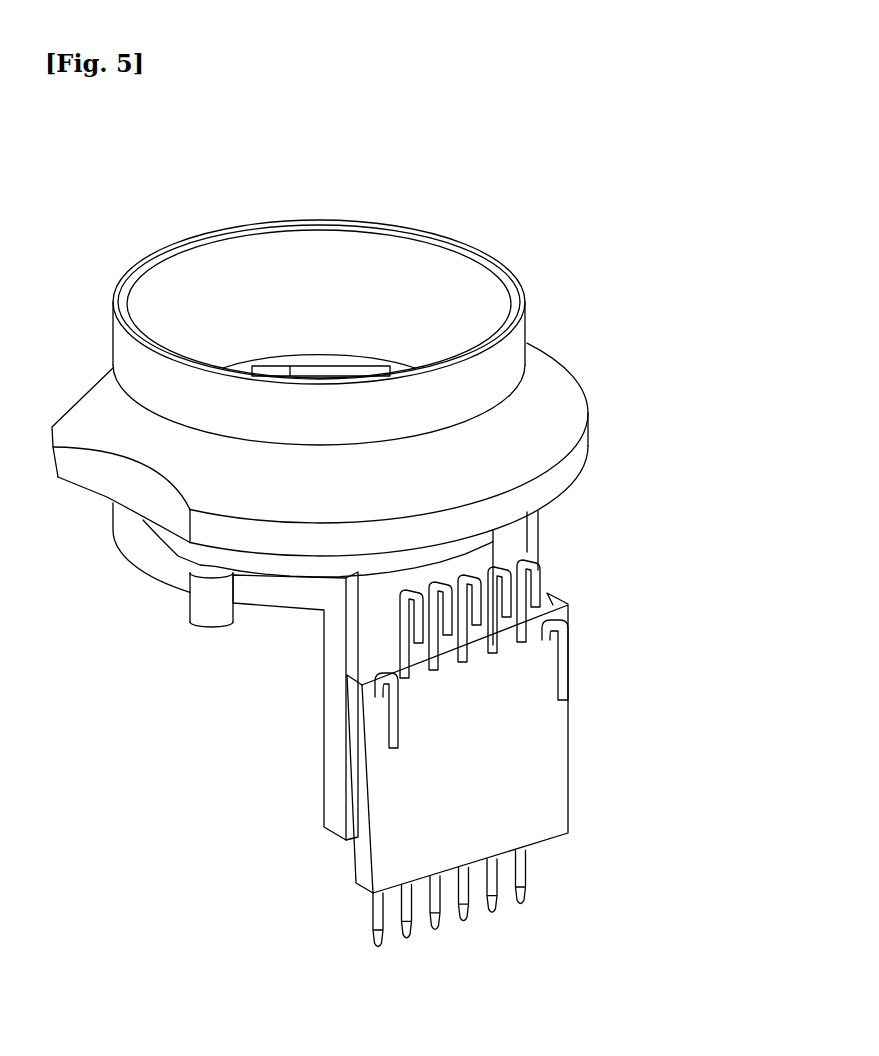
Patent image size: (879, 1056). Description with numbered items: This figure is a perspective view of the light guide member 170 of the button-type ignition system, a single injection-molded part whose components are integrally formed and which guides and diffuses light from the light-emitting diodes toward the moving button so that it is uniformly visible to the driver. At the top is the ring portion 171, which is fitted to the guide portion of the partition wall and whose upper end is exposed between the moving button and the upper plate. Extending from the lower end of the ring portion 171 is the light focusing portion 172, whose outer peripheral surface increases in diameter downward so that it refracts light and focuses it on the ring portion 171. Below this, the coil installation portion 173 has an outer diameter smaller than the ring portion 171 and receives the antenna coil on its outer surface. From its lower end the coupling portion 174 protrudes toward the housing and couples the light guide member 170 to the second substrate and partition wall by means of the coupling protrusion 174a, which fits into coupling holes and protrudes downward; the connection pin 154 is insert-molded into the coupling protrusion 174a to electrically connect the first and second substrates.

The light guide member 170 is at (346, 144).
The ring portion 171 is at (462, 247).
The light focusing portion 172 is at (558, 377).
The coil installation portion 173 is at (283, 558).
The coupling portion 174 is at (150, 562).
The coupling protrusion 174a is at (333, 800).
The connection pin 154 is at (410, 920).